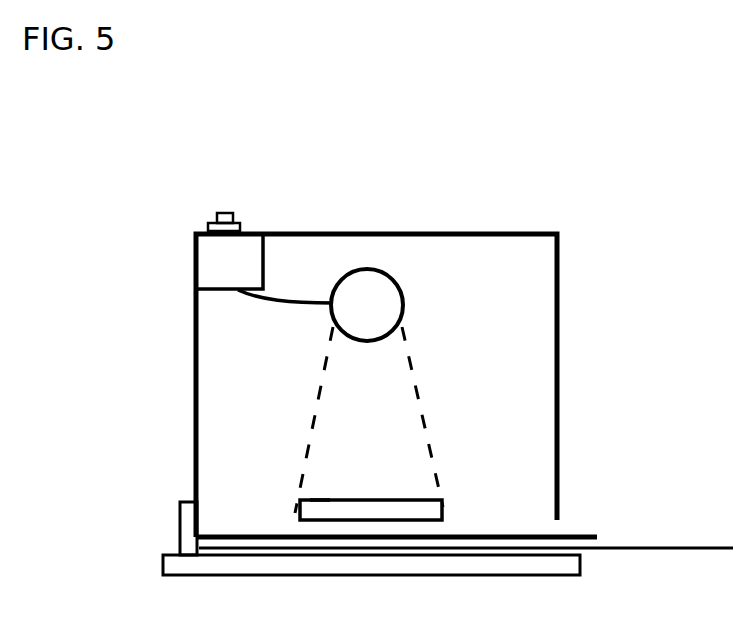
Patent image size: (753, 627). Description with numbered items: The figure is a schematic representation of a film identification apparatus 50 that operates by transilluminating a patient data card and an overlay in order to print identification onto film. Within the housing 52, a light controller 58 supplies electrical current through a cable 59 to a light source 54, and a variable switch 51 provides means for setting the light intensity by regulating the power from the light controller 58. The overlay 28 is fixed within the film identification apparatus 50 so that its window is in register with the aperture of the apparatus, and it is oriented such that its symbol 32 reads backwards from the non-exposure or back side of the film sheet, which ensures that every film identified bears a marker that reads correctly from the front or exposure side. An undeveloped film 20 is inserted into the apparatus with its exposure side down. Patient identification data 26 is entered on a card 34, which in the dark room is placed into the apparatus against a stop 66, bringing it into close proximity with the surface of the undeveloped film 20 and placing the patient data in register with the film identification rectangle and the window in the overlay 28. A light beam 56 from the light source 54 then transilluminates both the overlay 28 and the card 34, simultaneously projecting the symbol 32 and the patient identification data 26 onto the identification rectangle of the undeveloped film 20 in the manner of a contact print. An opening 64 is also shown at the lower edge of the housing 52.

The undeveloped film 20 is at (677, 547).
The patient identification data 26 is at (362, 540).
The overlay 28 is at (425, 510).
The symbol 32 is at (323, 500).
The card 34 is at (595, 538).
The film identification apparatus 50 is at (365, 142).
The variable switch 51 is at (215, 214).
The housing 52 is at (194, 360).
The light source 54 is at (378, 314).
The light beam 56 is at (382, 424).
The light controller 58 is at (240, 281).
The cable 59 is at (293, 302).
The opening 64 is at (568, 527).
The stop 66 is at (180, 538).